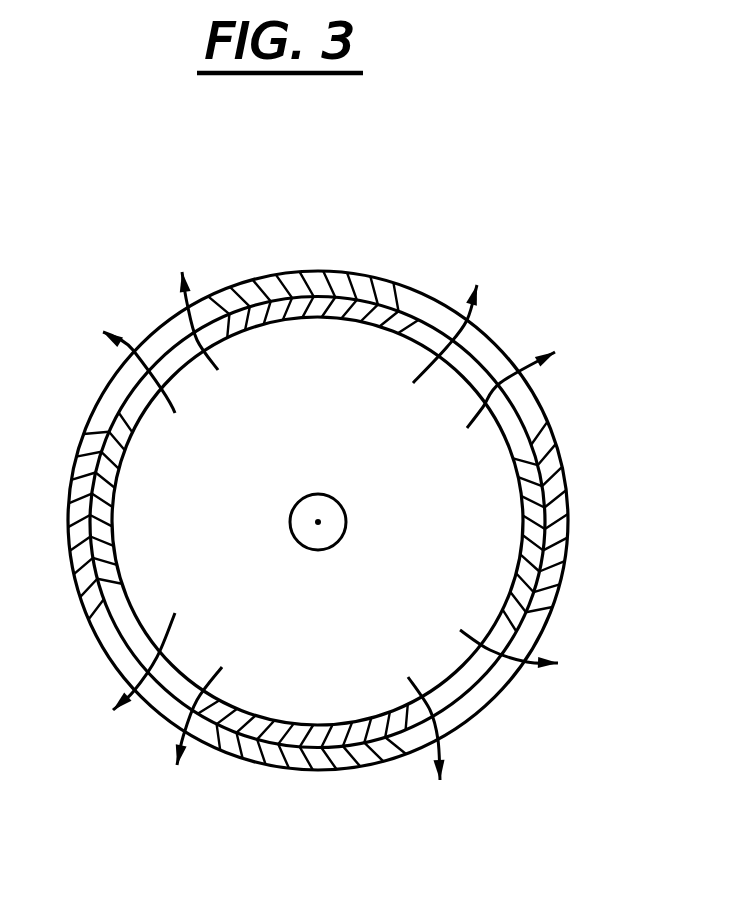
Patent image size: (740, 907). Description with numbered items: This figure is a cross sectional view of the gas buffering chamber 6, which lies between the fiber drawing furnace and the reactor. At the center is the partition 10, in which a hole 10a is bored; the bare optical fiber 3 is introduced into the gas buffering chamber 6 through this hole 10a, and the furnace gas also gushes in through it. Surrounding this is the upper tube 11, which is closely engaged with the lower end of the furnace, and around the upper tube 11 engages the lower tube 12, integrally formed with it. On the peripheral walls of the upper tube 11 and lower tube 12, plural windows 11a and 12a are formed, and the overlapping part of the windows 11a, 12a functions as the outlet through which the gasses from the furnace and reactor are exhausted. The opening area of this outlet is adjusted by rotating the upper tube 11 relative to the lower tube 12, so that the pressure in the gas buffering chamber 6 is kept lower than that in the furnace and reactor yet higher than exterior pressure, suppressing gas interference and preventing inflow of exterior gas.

The bare optical fiber 3 is at (318, 522).
The gas buffering chamber 6 is at (338, 648).
The partition 10 is at (498, 562).
The hole 10a is at (300, 548).
The upper tube 11 is at (560, 470).
The windows 11a is at (452, 692).
The lower tube 12 is at (553, 497).
The windows 12a is at (500, 678).